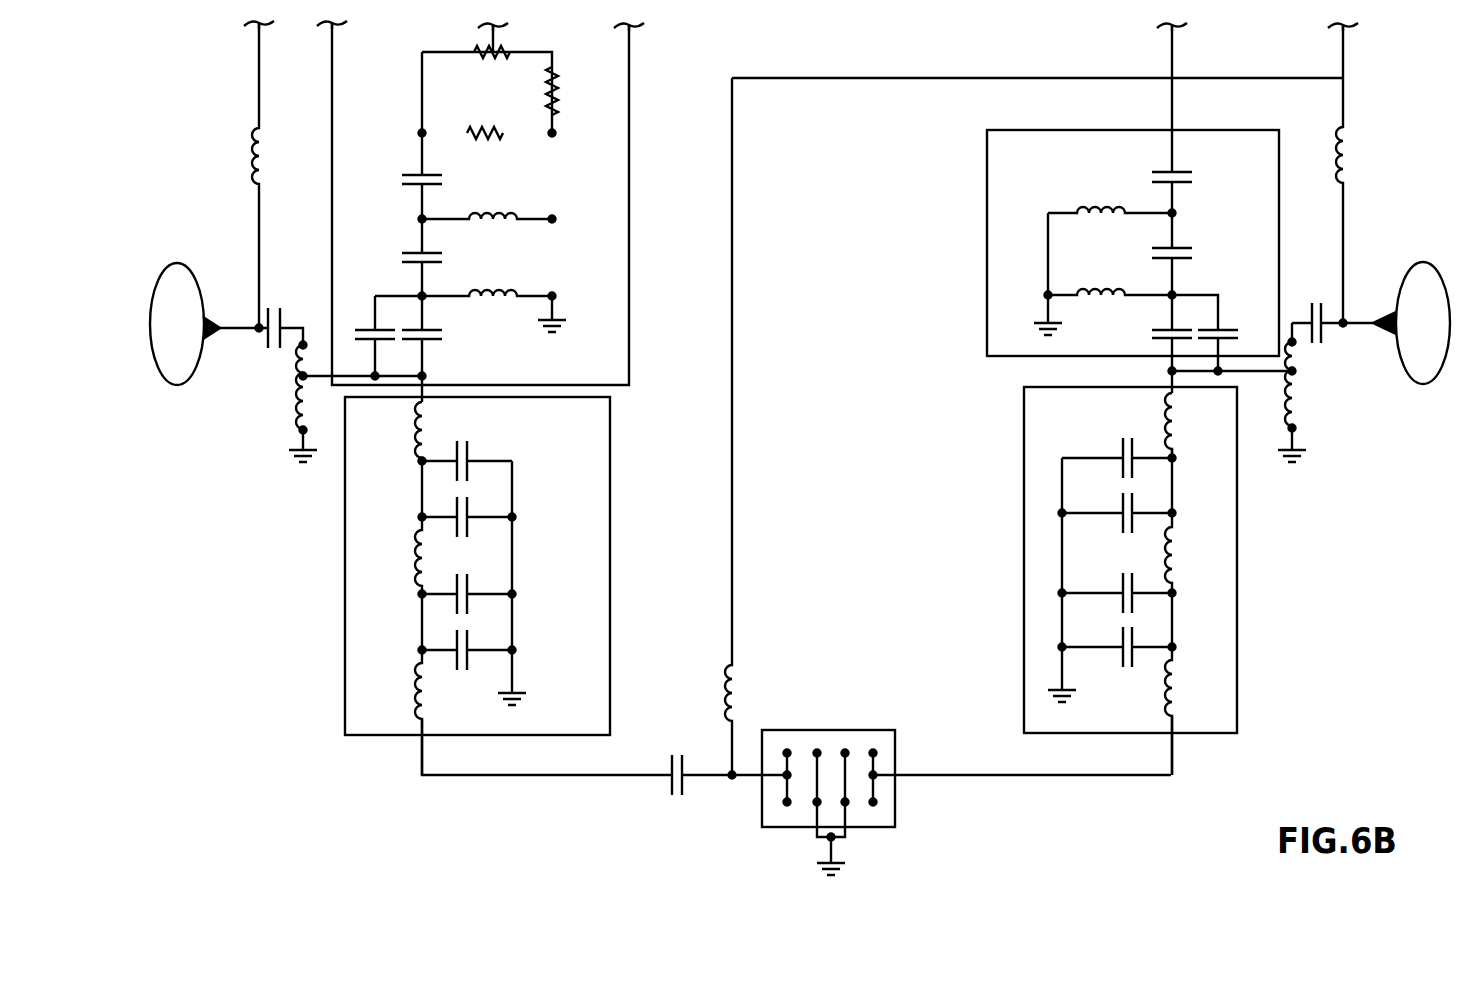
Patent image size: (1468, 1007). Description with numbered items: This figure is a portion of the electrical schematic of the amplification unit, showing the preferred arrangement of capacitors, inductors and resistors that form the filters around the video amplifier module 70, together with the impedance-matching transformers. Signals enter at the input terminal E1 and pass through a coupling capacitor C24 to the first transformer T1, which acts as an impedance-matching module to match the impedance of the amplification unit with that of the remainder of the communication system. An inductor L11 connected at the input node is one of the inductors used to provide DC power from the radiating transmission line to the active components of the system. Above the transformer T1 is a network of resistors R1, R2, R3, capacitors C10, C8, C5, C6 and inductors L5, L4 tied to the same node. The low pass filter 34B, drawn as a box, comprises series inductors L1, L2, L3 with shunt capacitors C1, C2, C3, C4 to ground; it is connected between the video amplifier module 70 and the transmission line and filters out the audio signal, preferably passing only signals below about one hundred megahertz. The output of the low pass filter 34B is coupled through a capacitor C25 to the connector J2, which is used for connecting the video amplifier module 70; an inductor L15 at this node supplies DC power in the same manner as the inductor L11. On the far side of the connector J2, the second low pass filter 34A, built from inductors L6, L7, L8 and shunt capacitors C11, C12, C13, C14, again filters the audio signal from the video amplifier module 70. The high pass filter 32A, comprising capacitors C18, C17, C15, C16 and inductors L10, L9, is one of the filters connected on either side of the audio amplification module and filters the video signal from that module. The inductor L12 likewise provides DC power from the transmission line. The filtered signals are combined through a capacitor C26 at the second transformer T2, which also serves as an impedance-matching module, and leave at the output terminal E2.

The input port E1 IN E1 is at (185, 324).
The inductor L11 is at (232, 176).
The capacitor C24 is at (290, 312).
The transformer T1 is at (286, 397).
The resistor R1 is at (488, 119).
The resistor R2 is at (492, 58).
The resistor R3 is at (570, 91).
The capacitor C10 is at (440, 165).
The inductor L5 is at (487, 202).
The capacitor C8 is at (432, 244).
The inductor L4 is at (487, 280).
The capacitor C5 is at (378, 336).
The capacitor C6 is at (431, 320).
The low pass filter 34B is at (337, 648).
The inductor L1 is at (400, 431).
The capacitor C1 is at (467, 456).
The capacitor C2 is at (467, 513).
The inductor L2 is at (398, 555).
The capacitor C3 is at (467, 589).
The capacitor C4 is at (467, 647).
The inductor L3 is at (398, 712).
The capacitor C25 is at (679, 760).
The inductor L15 is at (701, 426).
The connector J2 is at (828, 787).
The video amplifier module 70 is at (870, 830).
The high pass filter 32A is at (978, 272).
The capacitor C18 is at (1199, 179).
The inductor L10 is at (1110, 195).
The capacitor C17 is at (1199, 258).
The inductor L9 is at (1110, 274).
The capacitor C15 is at (1144, 333).
The capacitor C16 is at (1221, 333).
The low pass filter 34A is at (1252, 640).
The inductor L6 is at (1189, 425).
The capacitor C11 is at (1117, 453).
The capacitor C12 is at (1117, 509).
The inductor L7 is at (1188, 553).
The capacitor C13 is at (1117, 588).
The capacitor C14 is at (1117, 642).
The inductor L8 is at (1188, 711).
The inductor L12 is at (1363, 173).
The capacitor C26 is at (1309, 311).
The transformer T2 is at (1300, 398).
The output port E2 OUT E2 is at (1411, 323).